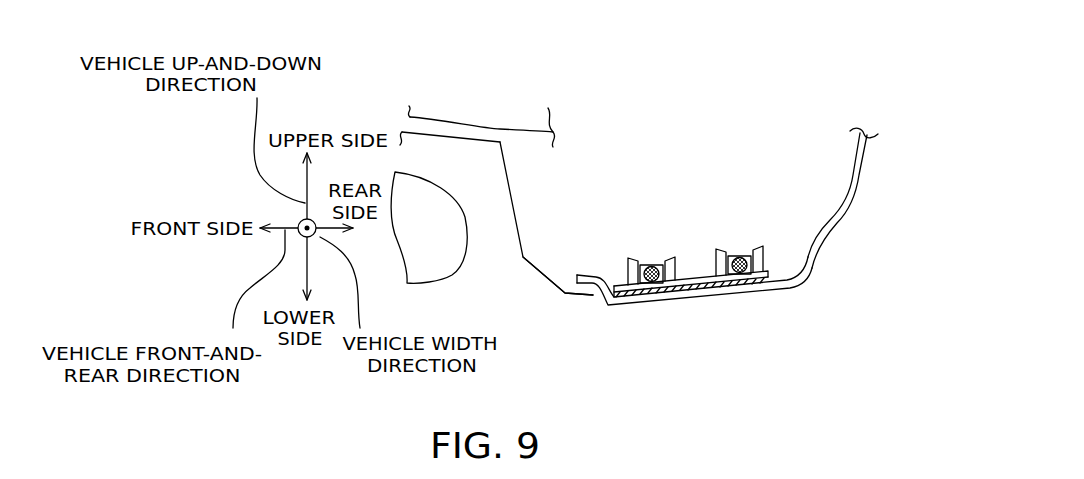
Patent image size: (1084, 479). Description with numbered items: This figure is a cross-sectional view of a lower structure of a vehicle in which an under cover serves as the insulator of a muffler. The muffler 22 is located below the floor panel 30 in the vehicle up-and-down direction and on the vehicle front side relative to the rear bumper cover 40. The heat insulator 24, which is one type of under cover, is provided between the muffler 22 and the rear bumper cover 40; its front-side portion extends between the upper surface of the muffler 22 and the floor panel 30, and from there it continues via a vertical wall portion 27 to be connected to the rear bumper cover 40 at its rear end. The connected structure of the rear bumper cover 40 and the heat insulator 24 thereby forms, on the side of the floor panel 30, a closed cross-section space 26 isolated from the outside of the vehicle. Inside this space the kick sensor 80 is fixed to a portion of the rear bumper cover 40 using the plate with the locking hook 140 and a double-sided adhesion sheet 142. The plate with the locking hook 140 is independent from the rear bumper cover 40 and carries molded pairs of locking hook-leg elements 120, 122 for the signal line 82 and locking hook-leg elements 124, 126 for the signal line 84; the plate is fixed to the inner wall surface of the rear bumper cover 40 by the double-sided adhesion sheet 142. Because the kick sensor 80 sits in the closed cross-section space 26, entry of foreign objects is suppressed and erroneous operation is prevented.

The muffler 22 is at (435, 258).
The heat insulator 24 is at (535, 272).
The closed cross-section space 26 is at (744, 136).
The vertical wall portion 27 is at (517, 198).
The floor panel 30 is at (450, 118).
The rear bumper cover 40 is at (840, 215).
The kick sensor 80 is at (683, 247).
The signal line 82 is at (648, 264).
The signal line 84 is at (740, 256).
The locking hook-leg element 120 is at (628, 270).
The locking hook-leg element 122 is at (676, 262).
The locking hook-leg element 124 is at (714, 255).
The locking hook-leg element 126 is at (762, 252).
The plate with locking hook 140 is at (685, 281).
The double-sided adhesion sheet 142 is at (717, 278).